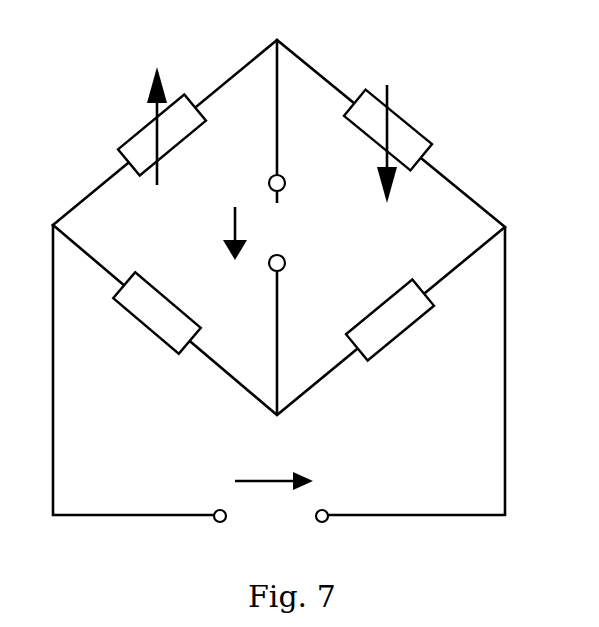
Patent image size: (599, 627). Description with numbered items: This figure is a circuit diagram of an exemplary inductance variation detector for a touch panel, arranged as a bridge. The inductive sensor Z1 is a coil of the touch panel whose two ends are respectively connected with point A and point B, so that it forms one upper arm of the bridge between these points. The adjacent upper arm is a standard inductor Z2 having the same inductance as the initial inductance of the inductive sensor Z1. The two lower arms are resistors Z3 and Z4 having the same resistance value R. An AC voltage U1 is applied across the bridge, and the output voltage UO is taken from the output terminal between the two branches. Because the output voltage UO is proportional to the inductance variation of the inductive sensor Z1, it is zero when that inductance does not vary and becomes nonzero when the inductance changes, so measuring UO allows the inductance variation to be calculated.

The inductive sensor Z1 is at (150, 126).
The standard inductor Z2 is at (373, 144).
The resistor Z3 is at (155, 337).
The resistor Z4 is at (407, 344).
The output voltage UO is at (264, 223).
The AC voltage U1 is at (274, 508).
The point A is at (274, 27).
The point B is at (42, 228).